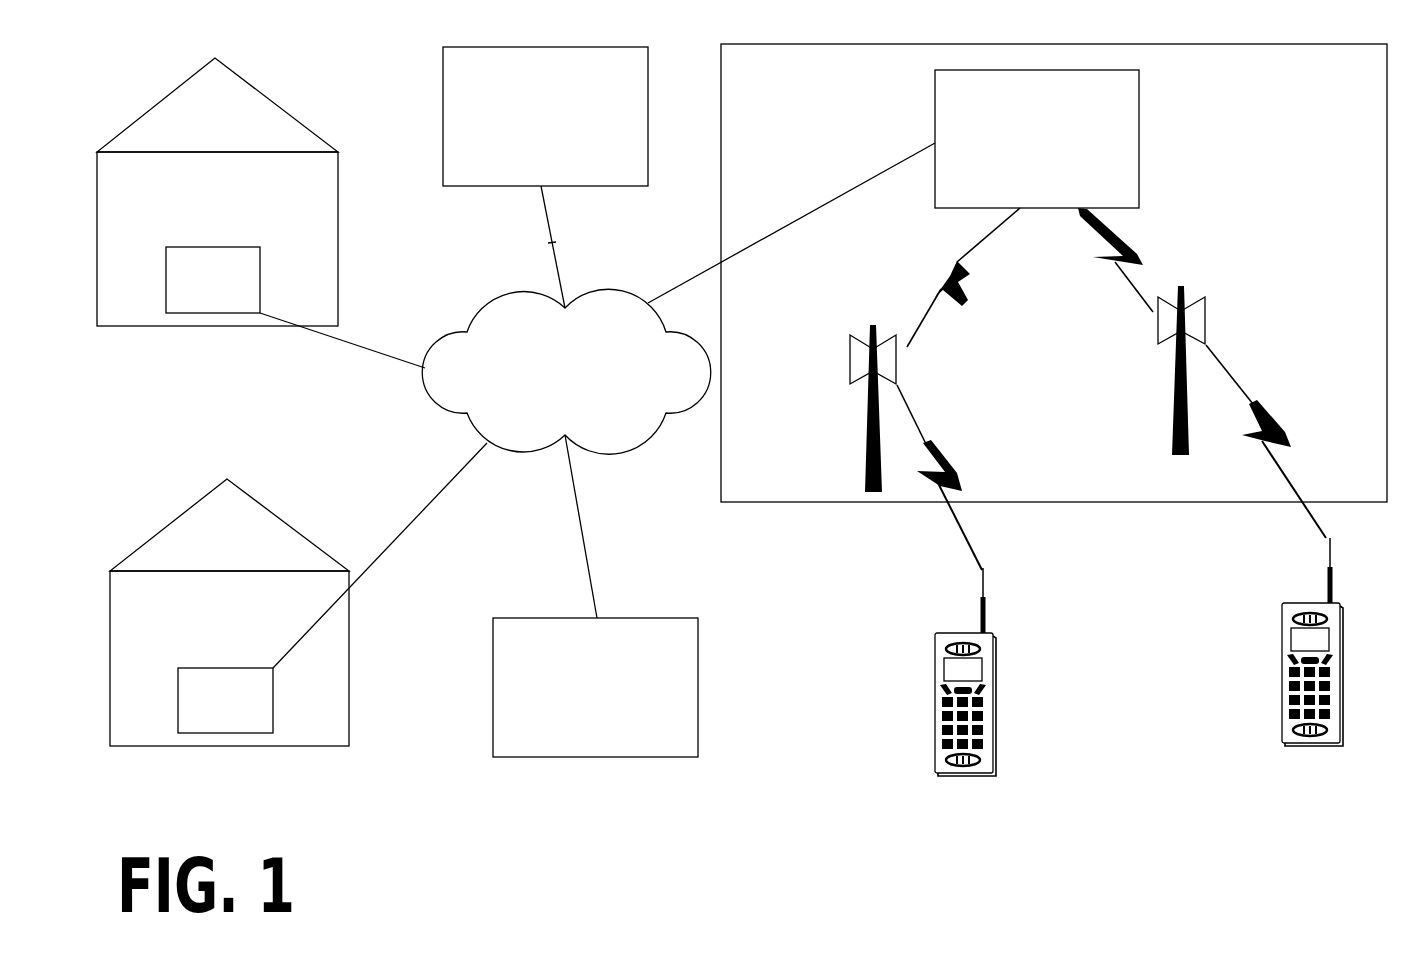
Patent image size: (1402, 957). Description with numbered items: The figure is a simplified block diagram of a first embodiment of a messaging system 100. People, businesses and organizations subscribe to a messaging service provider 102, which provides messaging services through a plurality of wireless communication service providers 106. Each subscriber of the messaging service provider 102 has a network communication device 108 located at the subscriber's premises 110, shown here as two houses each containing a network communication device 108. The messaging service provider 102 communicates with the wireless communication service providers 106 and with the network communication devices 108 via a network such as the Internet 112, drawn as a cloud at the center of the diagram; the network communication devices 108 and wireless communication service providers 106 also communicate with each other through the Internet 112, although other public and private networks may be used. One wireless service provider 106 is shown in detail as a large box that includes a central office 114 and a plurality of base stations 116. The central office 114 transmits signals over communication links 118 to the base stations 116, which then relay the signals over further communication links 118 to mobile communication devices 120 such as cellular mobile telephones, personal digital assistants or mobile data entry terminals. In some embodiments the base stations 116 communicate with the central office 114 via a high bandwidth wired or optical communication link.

The messaging system 100 is at (471, 874).
The messaging service provider 102 is at (517, 130).
The wireless communication service provider 106 is at (1234, 105).
The network communication device 108 is at (194, 292).
The subscriber's premises 110 is at (199, 137).
The Internet 112 is at (546, 384).
The central office 114 is at (1006, 164).
The base station 116 is at (865, 430).
The communication link 118 is at (940, 288).
The mobile communication device 120 is at (937, 705).